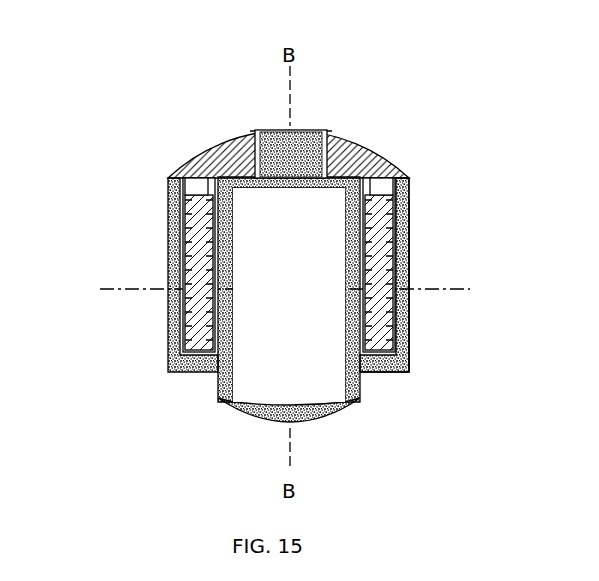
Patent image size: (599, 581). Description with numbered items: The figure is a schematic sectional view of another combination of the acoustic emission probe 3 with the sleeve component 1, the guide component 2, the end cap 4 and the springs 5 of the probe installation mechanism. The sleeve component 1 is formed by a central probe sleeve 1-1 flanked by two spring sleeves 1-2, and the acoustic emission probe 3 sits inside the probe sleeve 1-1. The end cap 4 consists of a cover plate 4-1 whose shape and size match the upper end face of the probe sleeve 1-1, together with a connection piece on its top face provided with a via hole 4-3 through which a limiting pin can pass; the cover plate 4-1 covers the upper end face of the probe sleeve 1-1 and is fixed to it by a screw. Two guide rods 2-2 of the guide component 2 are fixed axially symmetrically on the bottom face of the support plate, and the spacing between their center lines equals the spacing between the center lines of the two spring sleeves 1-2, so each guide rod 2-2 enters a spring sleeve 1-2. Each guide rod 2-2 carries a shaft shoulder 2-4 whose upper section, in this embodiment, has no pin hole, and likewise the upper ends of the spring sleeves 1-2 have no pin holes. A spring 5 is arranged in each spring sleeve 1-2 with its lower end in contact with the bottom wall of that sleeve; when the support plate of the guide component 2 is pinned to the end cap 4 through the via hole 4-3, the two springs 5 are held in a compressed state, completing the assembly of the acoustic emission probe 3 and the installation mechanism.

The sleeve component 1 is at (355, 390).
The probe sleeve 1-1 is at (302, 428).
The spring sleeve 1-2 is at (409, 262).
The guide component 2 is at (378, 160).
The guide rod 2-2 is at (198, 320).
The shaft shoulder 2-4 is at (188, 198).
The acoustic emission probe 3 is at (252, 345).
The end cap 4 is at (220, 152).
The cover plate 4-1 is at (282, 133).
The via hole 4-3 is at (292, 132).
The spring 5 is at (397, 288).